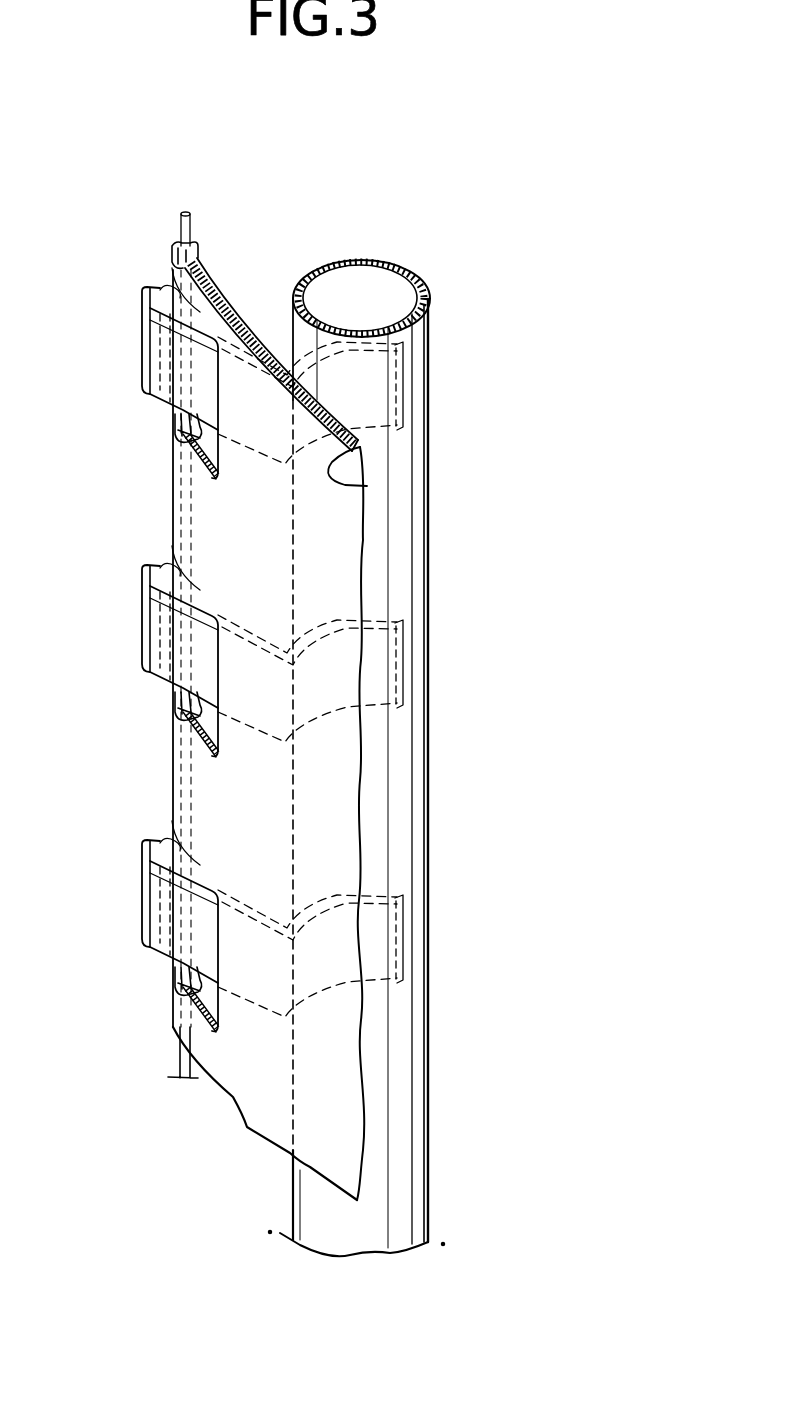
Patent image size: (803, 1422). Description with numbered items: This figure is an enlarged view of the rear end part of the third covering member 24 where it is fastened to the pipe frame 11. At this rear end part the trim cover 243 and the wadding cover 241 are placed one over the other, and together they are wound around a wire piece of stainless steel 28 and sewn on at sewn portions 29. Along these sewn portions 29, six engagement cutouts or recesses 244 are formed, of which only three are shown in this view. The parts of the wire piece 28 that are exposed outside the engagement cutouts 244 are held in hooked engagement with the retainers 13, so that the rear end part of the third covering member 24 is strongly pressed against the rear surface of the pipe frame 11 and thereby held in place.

The pipe frame 11 is at (400, 792).
The retainer 13 is at (150, 618).
The third covering member 24 is at (245, 1116).
The wadding cover 241 is at (352, 432).
The trim cover 243 is at (367, 486).
The engagement cutout 244 is at (218, 663).
The wire piece of stainless steel 28 is at (178, 1057).
The sewn portion 29 is at (200, 262).